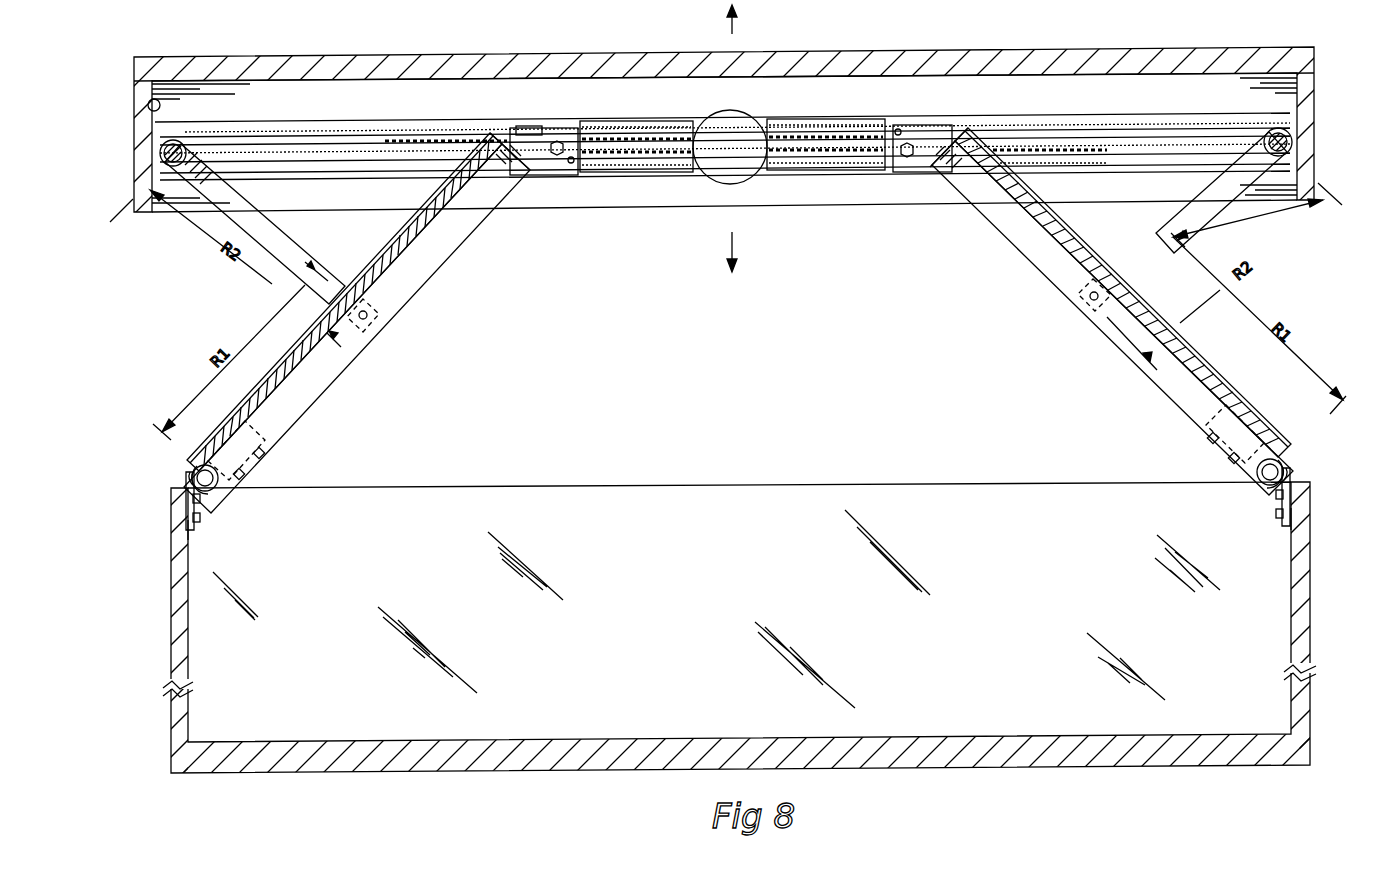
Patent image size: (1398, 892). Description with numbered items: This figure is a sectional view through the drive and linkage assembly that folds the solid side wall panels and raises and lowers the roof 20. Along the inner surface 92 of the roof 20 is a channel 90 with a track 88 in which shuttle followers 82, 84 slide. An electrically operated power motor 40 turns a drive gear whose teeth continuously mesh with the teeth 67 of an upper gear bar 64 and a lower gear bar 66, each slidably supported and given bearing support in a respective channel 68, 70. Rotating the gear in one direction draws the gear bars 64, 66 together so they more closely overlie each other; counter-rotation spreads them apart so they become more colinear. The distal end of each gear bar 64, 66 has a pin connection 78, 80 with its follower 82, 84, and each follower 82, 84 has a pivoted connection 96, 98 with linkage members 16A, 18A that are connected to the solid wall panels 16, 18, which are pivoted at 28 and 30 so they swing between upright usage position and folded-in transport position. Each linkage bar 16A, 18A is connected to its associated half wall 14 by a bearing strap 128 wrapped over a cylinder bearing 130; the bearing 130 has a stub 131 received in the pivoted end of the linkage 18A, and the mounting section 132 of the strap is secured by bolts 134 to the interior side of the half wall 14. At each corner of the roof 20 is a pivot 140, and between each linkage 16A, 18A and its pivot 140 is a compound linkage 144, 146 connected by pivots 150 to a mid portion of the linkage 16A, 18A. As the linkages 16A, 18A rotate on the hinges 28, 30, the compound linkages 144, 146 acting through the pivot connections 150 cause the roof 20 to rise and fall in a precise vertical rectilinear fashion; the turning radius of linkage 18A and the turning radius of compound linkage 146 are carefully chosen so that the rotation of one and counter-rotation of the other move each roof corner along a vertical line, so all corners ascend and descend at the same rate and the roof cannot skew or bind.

The half wall 14 is at (650, 561).
The solid wall panel 16 is at (1215, 348).
The linkage member 16A is at (1120, 350).
The solid wall panel 18 is at (290, 356).
The linkage member 18A is at (292, 402).
The roof 20 is at (1150, 50).
The pivot 28 is at (223, 494).
The pivot 30 is at (1284, 447).
The power motor 40 is at (727, 186).
The upper gear bar 64 is at (652, 136).
The lower gear bar 66 is at (645, 168).
The teeth 67 is at (622, 156).
The channel 68 is at (1085, 132).
The channel 70 is at (1108, 172).
The pin connection 78 is at (900, 129).
The pin connection 80 is at (571, 164).
The shuttle follower 82 is at (905, 172).
The shuttle follower 84 is at (535, 126).
The track 88 is at (597, 128).
The channel 90 is at (330, 120).
The inner surface 92 is at (148, 104).
The pivoted connection 96 is at (912, 157).
The pivoted connection 98 is at (559, 140).
The bearing strap 128 is at (208, 490).
The cylinder bearing 130 is at (192, 476).
The stub 131 is at (250, 458).
The mounting section 132 is at (184, 531).
The bolts 134 is at (201, 516).
The pivot 140 is at (163, 156).
The compound linkage 144 is at (1165, 232).
The compound linkage 146 is at (272, 270).
The pivot 150 is at (373, 318).